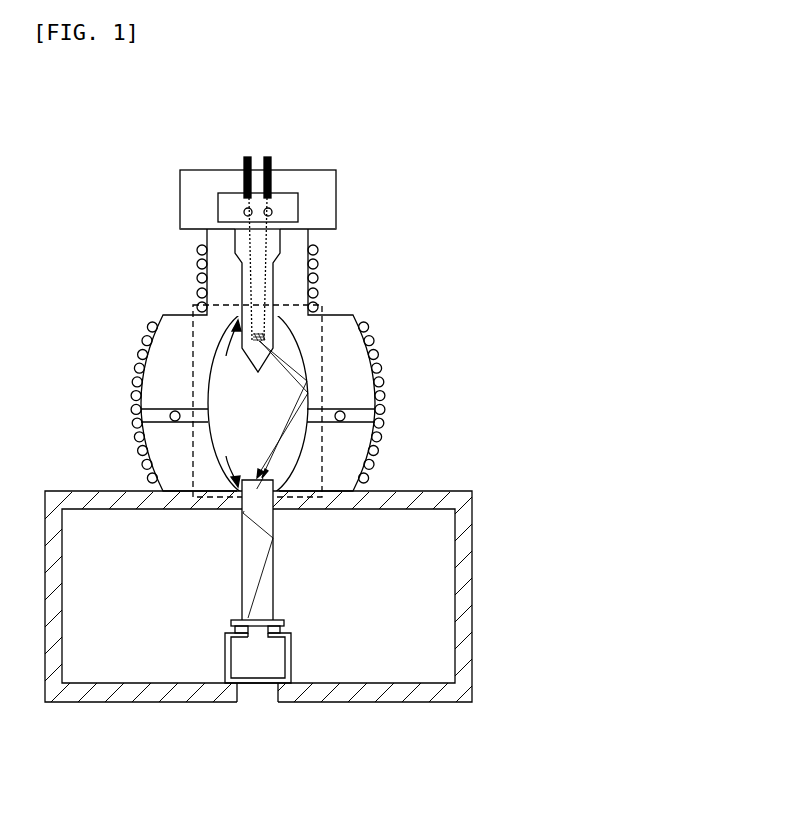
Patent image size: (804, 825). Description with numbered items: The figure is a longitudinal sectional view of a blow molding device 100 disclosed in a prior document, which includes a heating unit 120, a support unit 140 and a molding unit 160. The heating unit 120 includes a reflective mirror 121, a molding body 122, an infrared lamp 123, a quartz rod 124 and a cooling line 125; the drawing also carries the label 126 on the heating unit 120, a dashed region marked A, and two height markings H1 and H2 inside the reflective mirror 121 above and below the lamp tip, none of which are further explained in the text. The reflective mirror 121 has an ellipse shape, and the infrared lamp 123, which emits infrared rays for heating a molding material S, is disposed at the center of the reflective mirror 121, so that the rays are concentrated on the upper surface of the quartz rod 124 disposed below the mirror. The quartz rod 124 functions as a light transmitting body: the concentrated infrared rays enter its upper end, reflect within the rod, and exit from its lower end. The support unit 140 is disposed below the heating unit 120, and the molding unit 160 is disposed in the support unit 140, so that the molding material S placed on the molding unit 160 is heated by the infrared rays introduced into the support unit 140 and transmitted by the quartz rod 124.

The blow molding device 100 is at (277, 111).
The heating unit 120 is at (412, 385).
The reflective mirror 121 is at (207, 384).
The molding body 122 is at (350, 335).
The infrared lamp 123 is at (298, 208).
The quartz rod 124 is at (250, 557).
The cooling line 125 is at (382, 441).
The plate hole 126 is at (353, 413).
The support unit 140 is at (492, 597).
The molding unit 160 is at (298, 655).
The detail region A is at (327, 336).
The upper height H1 is at (227, 350).
The lower height H2 is at (227, 456).
The molding material S is at (258, 633).